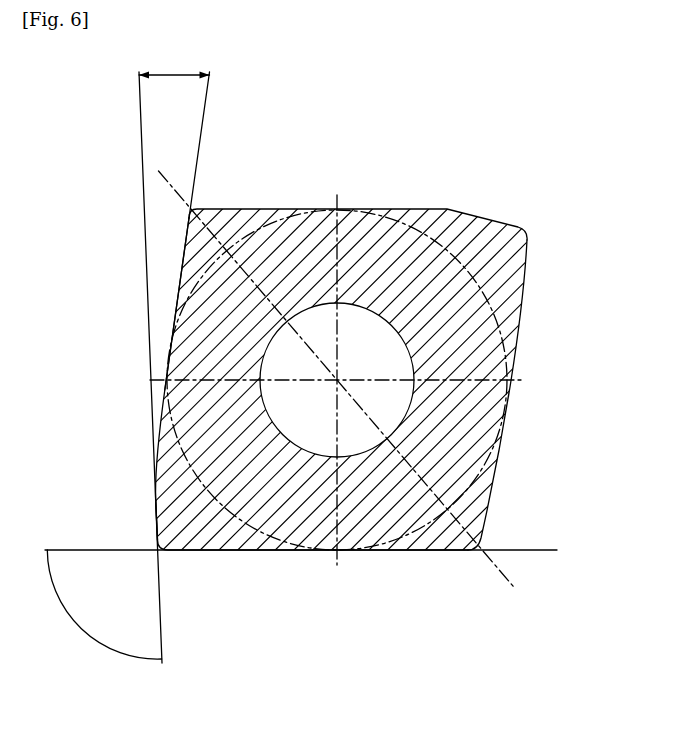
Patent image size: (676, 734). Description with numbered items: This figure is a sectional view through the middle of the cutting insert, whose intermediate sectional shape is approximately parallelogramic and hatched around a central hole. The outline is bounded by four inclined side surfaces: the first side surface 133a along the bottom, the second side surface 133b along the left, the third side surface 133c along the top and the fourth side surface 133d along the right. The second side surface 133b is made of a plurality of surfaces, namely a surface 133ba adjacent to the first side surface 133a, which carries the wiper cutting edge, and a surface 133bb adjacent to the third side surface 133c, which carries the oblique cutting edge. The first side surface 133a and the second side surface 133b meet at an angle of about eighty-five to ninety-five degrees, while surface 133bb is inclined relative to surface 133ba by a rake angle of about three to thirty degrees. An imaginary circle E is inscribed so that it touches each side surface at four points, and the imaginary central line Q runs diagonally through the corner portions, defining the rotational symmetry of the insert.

The first side surface 133a is at (262, 560).
The second side surface 133b is at (149, 440).
The surface of the second side surface adjacent to the first side surface 133ba is at (154, 476).
The surface of the second side surface adjacent to the third side surface 133bb is at (183, 251).
The third side surface 133c is at (357, 201).
The fourth side surface 133d is at (514, 412).
The imaginary circle E is at (438, 238).
The imaginary central line Q is at (345, 389).